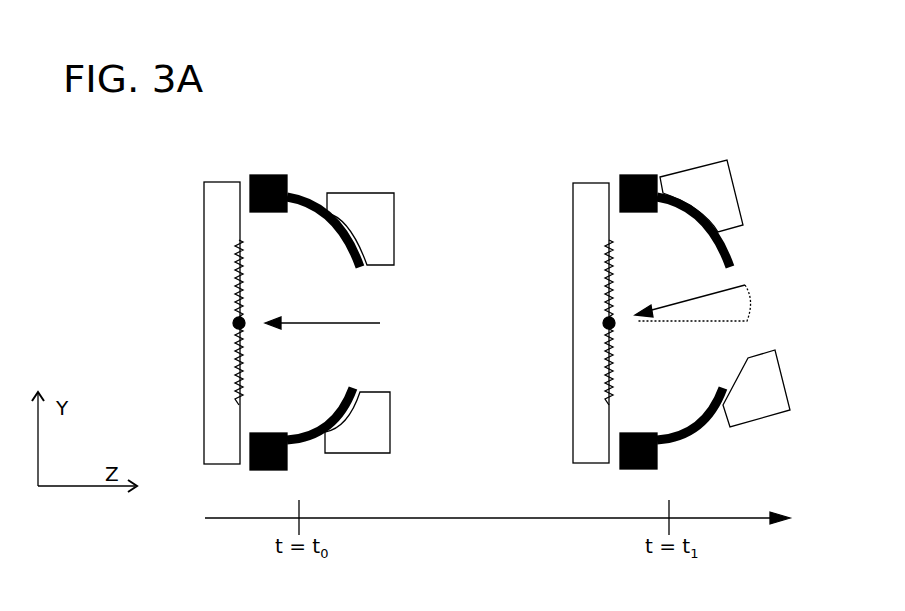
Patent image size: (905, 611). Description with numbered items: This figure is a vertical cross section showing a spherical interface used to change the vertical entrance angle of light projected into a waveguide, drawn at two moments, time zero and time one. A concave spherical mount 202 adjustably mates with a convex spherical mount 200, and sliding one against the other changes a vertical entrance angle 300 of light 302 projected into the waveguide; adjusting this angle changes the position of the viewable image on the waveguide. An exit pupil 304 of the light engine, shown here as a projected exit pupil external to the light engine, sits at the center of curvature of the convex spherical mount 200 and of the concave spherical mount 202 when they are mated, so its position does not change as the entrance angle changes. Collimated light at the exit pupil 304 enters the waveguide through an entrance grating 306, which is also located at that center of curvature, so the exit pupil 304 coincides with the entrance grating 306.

The convex spherical mount 200 is at (267, 170).
The concave spherical mount 202 is at (367, 185).
The vertical entrance angle 300 is at (755, 310).
The light 302 is at (333, 332).
The exit pupil 304 is at (228, 323).
The entrance grating 306 is at (237, 289).